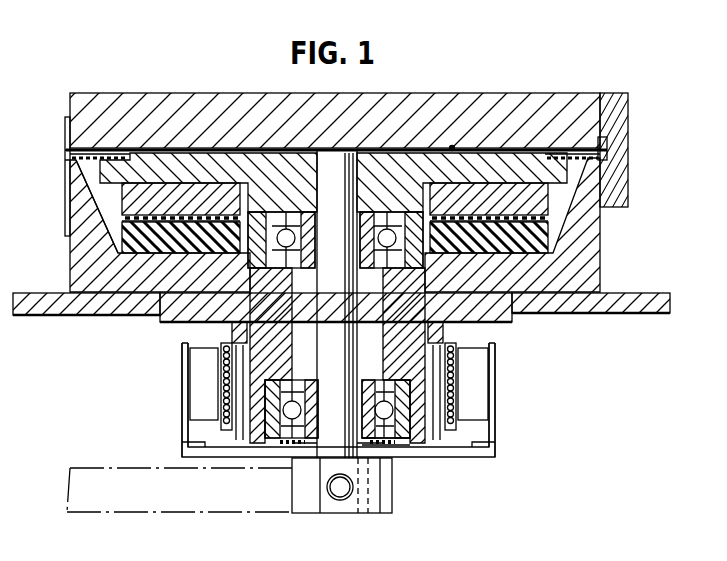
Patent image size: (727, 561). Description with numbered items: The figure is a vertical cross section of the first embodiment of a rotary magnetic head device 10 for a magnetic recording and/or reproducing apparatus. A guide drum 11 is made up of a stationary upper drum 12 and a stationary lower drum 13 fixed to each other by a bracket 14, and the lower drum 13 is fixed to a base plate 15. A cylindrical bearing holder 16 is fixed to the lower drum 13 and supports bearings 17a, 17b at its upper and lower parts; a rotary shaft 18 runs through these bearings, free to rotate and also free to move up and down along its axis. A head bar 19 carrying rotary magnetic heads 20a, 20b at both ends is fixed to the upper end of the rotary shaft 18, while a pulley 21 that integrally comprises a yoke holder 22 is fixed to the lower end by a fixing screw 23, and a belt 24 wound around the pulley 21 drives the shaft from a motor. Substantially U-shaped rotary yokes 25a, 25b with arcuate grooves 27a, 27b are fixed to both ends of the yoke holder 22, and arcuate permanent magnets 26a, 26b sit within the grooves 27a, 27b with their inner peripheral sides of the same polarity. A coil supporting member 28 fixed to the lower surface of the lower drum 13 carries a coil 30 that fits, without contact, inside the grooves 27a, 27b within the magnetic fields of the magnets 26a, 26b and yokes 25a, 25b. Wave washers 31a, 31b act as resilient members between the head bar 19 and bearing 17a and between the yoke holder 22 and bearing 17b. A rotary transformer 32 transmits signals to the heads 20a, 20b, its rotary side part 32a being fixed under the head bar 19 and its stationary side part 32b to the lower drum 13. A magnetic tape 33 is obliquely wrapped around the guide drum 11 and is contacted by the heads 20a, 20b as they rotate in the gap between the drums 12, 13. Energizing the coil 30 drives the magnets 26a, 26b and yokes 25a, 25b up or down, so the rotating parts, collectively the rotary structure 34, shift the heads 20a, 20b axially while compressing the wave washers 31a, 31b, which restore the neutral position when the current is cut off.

The rotary magnetic head device 10 is at (559, 73).
The guide drum 11 is at (146, 89).
The stationary upper drum 12 is at (93, 100).
The stationary lower drum 13 is at (70, 254).
The bracket 14 is at (628, 105).
The base plate 15 is at (662, 293).
The cylindrical bearing holder 16 is at (290, 297).
The bearing 17a is at (292, 214).
The bearing 17b is at (285, 444).
The rotary shaft 18 is at (400, 438).
The head bar 19 is at (225, 160).
The rotary magnetic head 20a is at (608, 149).
The rotary magnetic head 20b is at (65, 140).
The pulley 21 is at (368, 508).
The yoke holder 22 is at (466, 452).
The fixing screw 23 is at (340, 492).
The belt 24 is at (185, 512).
The rotary yoke 25a is at (496, 410).
The rotary yoke 25b is at (183, 410).
The arcuate permanent magnet 26a is at (480, 372).
The arcuate permanent magnet 26b is at (196, 367).
The arcuate groove 27a is at (456, 344).
The arcuate groove 27b is at (225, 346).
The coil supporting member 28 is at (515, 322).
The coil 30 is at (458, 422).
The wave washer 31a is at (375, 214).
The wave washer 31b is at (385, 447).
The rotary transformer 32 is at (552, 218).
The rotary side part 32a is at (548, 190).
The stationary side part 32b is at (548, 240).
The magnetic tape 33 is at (68, 190).
The rotary structure 34 is at (453, 146).